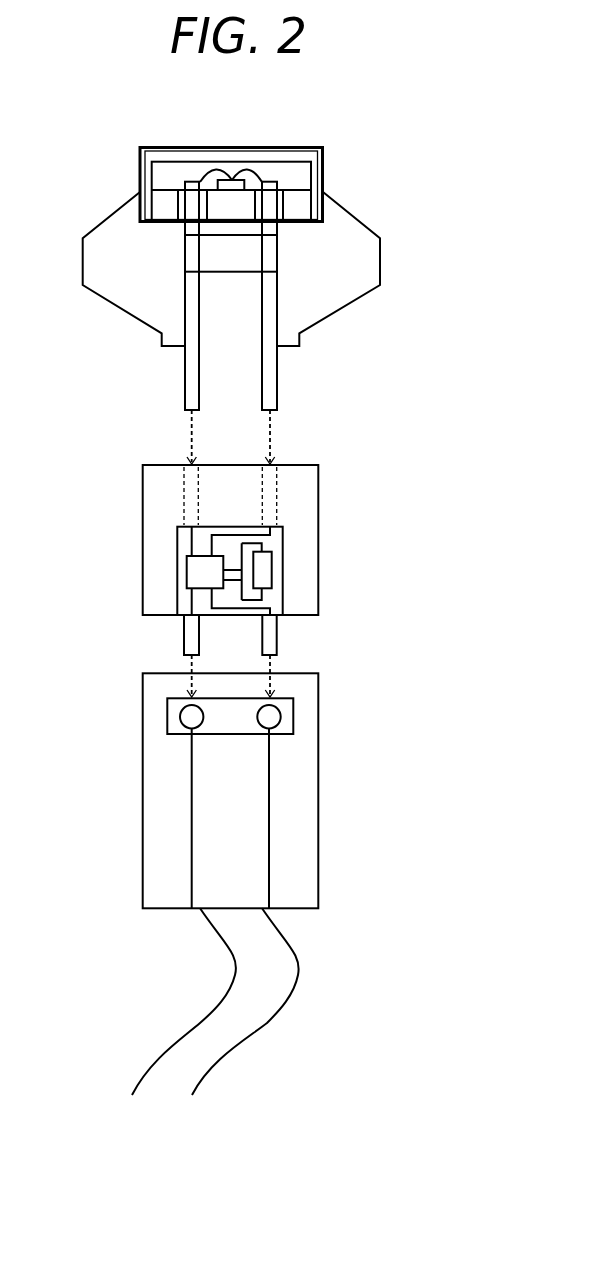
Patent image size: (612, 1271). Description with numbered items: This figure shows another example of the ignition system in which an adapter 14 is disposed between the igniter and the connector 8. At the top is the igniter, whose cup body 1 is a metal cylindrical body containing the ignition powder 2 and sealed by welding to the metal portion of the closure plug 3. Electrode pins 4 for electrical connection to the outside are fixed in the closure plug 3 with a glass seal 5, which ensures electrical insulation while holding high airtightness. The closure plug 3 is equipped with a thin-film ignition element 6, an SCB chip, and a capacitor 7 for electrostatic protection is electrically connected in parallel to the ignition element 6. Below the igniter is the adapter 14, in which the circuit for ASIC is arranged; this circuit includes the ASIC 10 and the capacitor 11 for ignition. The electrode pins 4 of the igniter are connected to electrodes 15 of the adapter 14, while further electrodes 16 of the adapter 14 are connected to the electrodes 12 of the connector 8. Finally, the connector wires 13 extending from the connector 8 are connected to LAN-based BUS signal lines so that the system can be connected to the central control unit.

The cup body 1 is at (183, 158).
The ignition powder 2 is at (292, 175).
The closure plug 3 is at (300, 202).
The electrode pins 4 is at (193, 382).
The glass seal 5 is at (178, 207).
The thin-film ignition element 6 is at (230, 185).
The capacitor for electrostatic protection 7 is at (262, 256).
The connector 8 is at (300, 820).
The ASIC 10 is at (197, 570).
The capacitor for ignition 11 is at (267, 562).
The electrodes of the connector 12 is at (188, 717).
The connector wires 13 is at (207, 1023).
The adapter 14 is at (300, 588).
The electrodes of the adapter 15 is at (188, 493).
The electrodes of the adapter 16 is at (188, 638).